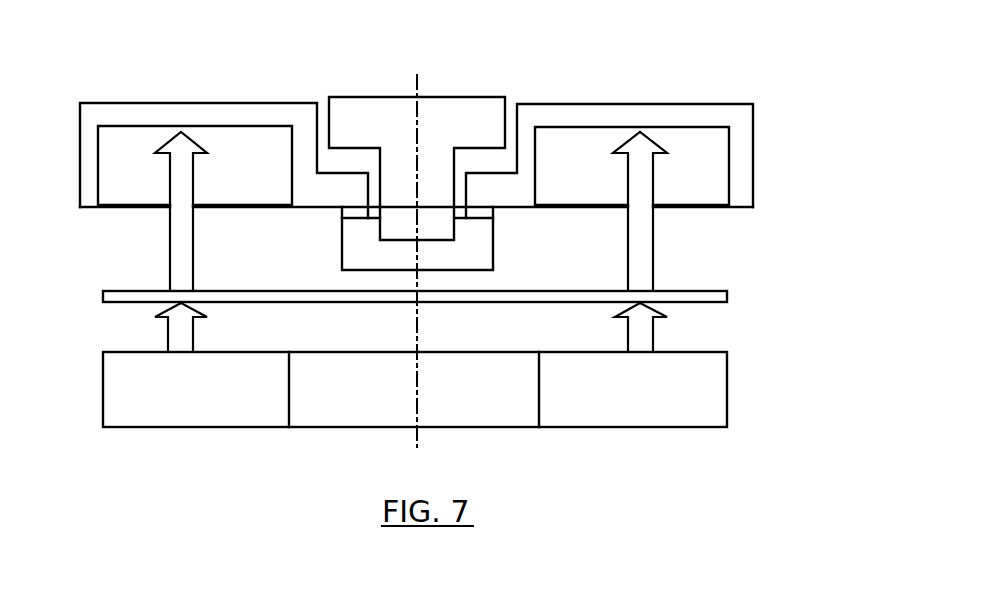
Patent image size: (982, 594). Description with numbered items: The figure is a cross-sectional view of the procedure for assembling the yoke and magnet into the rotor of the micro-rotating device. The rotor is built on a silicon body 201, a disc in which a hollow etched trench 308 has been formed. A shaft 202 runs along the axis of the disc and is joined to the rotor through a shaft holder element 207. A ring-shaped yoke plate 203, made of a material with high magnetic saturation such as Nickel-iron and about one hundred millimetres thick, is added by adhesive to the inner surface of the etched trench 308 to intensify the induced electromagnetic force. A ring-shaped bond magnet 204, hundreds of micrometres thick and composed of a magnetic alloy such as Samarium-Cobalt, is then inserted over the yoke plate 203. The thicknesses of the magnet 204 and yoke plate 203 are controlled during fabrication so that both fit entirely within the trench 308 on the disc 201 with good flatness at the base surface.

The silicon body 201 is at (210, 118).
The shaft 202 is at (480, 110).
The etched trench 308 is at (590, 143).
The shaft holder element 207 is at (475, 261).
The yoke plate 203 is at (735, 289).
The bond magnet 204 is at (665, 403).